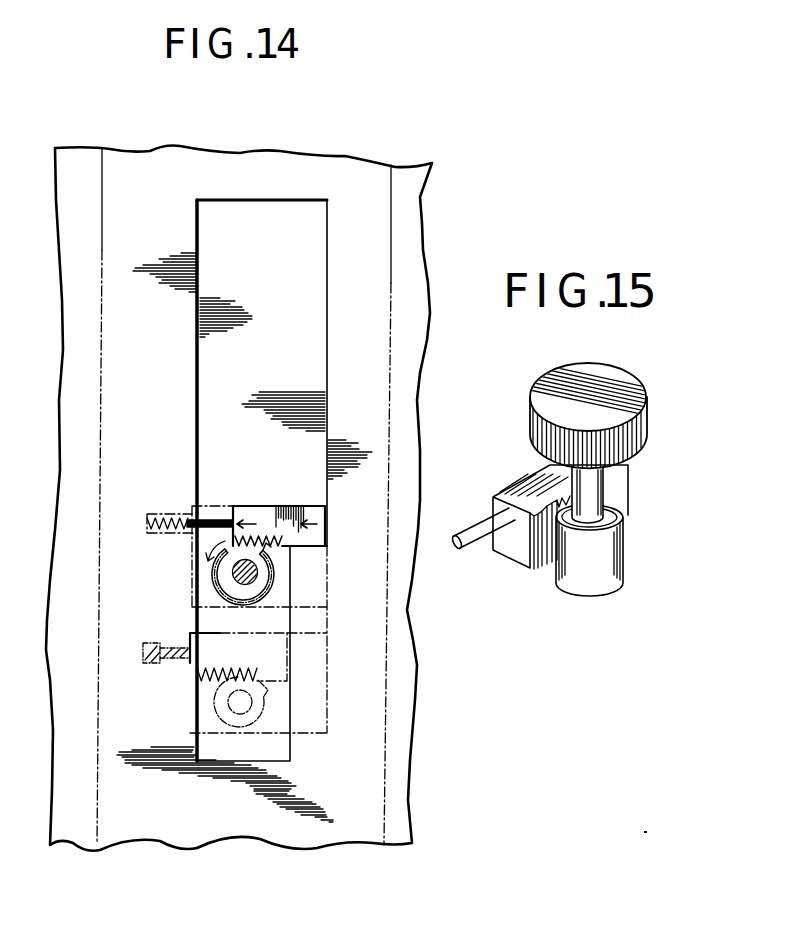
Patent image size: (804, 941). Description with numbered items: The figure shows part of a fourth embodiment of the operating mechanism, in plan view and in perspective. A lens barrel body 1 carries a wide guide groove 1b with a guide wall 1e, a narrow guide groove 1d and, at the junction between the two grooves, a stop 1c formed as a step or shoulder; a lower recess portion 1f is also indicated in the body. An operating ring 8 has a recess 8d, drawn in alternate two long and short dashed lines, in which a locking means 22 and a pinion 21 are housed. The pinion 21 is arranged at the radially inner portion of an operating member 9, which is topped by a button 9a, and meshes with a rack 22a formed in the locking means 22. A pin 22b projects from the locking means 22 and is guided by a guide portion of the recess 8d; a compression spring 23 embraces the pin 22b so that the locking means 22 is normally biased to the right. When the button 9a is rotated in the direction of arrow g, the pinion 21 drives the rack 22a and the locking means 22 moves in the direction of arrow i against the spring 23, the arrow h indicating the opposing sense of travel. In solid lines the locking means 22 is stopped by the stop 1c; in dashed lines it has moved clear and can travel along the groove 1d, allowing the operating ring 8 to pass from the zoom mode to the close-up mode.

In FIG. 14, the lens barrel body 1 is at (407, 228).
In FIG. 14, the guide groove 1b is at (222, 260).
In FIG. 14, the stop 1c is at (313, 547).
In FIG. 14, the guide groove 1d is at (272, 748).
In FIG. 14, the guide wall 1e is at (324, 352).
In FIG. 14, the lower recess 1f is at (289, 622).
In FIG. 14, the operating ring 8 is at (102, 357).
In FIG. 14, the recess 8d is at (328, 601).
In FIG. 14, the operating member 9 is at (243, 578).
In FIG. 15, the operating member 9 is at (595, 502).
In FIG. 15, the button 9a is at (637, 440).
In FIG. 14, the pinion 21 is at (227, 593).
In FIG. 15, the pinion 21 is at (614, 572).
In FIG. 14, the locking means 22 is at (270, 506).
In FIG. 15, the locking means 22 is at (623, 492).
In FIG. 14, the rack 22a is at (273, 550).
In FIG. 15, the rack 22a is at (543, 560).
In FIG. 14, the pin 22b is at (210, 521).
In FIG. 15, the pin 22b is at (472, 523).
In FIG. 14, the compression spring 23 is at (152, 518).
In FIG. 14, the arrow (rotation direction of button) g is at (225, 541).
In FIG. 14, the movement direction arrow h is at (317, 524).
In FIG. 14, the arrow (movement direction of locking means) i is at (248, 519).